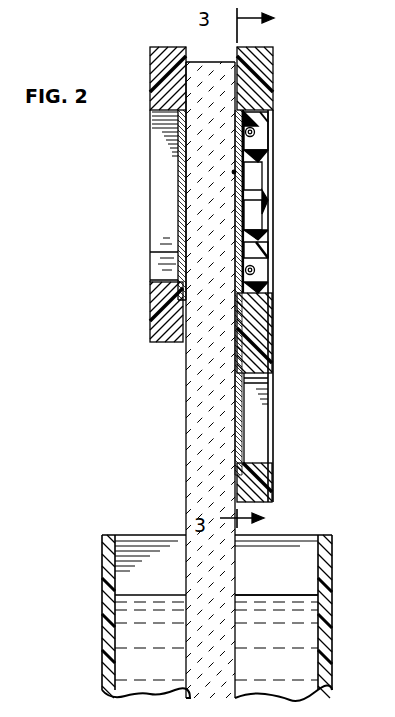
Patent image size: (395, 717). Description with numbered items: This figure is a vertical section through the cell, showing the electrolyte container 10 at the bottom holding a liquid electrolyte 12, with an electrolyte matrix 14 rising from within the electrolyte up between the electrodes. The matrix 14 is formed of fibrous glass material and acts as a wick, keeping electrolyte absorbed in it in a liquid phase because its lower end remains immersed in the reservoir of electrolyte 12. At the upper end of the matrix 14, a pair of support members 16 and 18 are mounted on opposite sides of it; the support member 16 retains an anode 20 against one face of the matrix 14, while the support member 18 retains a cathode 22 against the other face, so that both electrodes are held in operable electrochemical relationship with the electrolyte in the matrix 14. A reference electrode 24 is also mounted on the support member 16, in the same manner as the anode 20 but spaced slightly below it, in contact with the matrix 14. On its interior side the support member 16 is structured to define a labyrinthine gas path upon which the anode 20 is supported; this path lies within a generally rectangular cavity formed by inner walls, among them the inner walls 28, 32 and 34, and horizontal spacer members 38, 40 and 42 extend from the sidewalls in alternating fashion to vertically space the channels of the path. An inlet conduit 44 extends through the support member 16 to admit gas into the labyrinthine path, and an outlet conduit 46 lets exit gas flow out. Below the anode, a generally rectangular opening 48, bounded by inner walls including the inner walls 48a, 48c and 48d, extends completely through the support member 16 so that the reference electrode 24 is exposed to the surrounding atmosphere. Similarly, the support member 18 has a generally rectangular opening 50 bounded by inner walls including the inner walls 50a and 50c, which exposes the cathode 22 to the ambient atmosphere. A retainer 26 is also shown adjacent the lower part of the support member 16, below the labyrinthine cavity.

The electrolyte container 10 is at (104, 586).
The liquid electrolyte 12 is at (277, 615).
The electrolyte matrix 14 is at (186, 418).
The support member 16 is at (258, 64).
The support member 18 is at (162, 72).
The anode 20 is at (236, 172).
The cathode 22 is at (178, 180).
The reference electrode 24 is at (270, 430).
The seal retainer 26 is at (274, 316).
The inner wall 28 is at (284, 123).
The inner wall 32 is at (264, 284).
The inner wall 34 is at (266, 222).
The horizontal spacer member 38 is at (264, 142).
The horizontal spacer member 40 is at (270, 212).
The horizontal spacer member 42 is at (270, 244).
The inlet conduit 44 is at (257, 131).
The outlet conduit 46 is at (256, 267).
The rectangular opening 48 is at (289, 434).
The inner wall 48a is at (270, 380).
The inner wall 48c is at (250, 465).
The inner wall 48d is at (275, 404).
The rectangular opening 50 is at (131, 226).
The inner wall 50a is at (152, 128).
The inner wall 50c is at (158, 280).